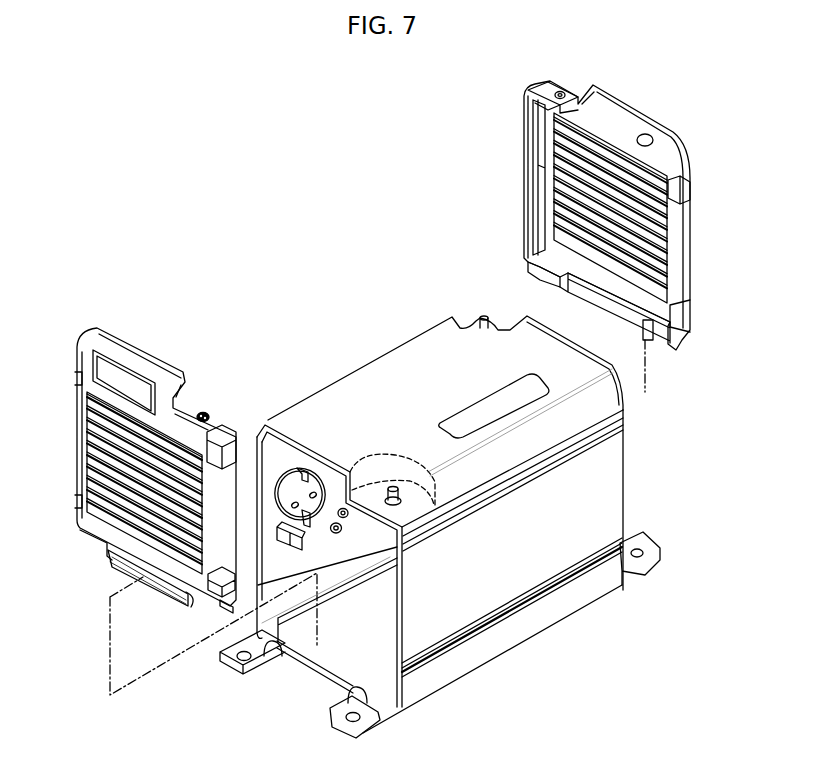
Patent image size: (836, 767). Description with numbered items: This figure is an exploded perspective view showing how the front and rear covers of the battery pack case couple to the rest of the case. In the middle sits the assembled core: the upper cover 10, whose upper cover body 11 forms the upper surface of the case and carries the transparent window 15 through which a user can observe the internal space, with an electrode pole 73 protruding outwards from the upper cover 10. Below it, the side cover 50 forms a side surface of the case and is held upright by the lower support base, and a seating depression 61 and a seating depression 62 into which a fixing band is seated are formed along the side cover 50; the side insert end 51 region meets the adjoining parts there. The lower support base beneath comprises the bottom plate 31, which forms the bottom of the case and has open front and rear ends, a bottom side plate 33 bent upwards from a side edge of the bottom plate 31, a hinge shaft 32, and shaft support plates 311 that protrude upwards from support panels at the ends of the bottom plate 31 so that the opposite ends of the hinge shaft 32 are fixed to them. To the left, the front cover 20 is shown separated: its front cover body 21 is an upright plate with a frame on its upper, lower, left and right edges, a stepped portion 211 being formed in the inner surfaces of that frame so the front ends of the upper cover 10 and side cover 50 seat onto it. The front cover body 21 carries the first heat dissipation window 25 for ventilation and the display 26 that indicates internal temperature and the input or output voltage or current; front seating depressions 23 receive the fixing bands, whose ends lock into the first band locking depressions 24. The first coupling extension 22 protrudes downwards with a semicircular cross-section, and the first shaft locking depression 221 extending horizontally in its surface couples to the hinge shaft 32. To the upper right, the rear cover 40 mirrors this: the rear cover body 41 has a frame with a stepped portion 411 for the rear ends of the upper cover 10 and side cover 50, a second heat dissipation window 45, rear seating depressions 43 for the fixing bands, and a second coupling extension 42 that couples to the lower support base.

The upper cover 10 is at (400, 330).
The upper cover body 11 is at (352, 395).
The transparent window 15 is at (483, 405).
The electrode pole 73 is at (392, 487).
The front cover 20 is at (80, 318).
The front cover body 21 is at (82, 425).
The stepped portion 211 is at (148, 355).
The display 26 is at (103, 367).
The first heat dissipation window 25 is at (108, 470).
The first band locking depression 24 is at (219, 420).
The front seating depression 23 is at (236, 444).
The first shaft locking depression 221 is at (118, 570).
The first coupling extension 22 is at (191, 607).
The rear cover 40 is at (712, 148).
The rear cover body 41 is at (680, 150).
The stepped portion 411 is at (533, 148).
The rear seating depression 43 is at (688, 200).
The second heat dissipation window 45 is at (674, 242).
The second coupling extension 42 is at (640, 337).
The side cover 50 is at (648, 485).
The side panel 51 is at (598, 503).
The seating depression 61 is at (608, 437).
The seating depression 62 is at (603, 565).
The bottom side plate 33 is at (482, 648).
The bottom plate 31 is at (333, 652).
The hinge shaft 32 is at (324, 680).
The shaft support plate 311 is at (366, 703).